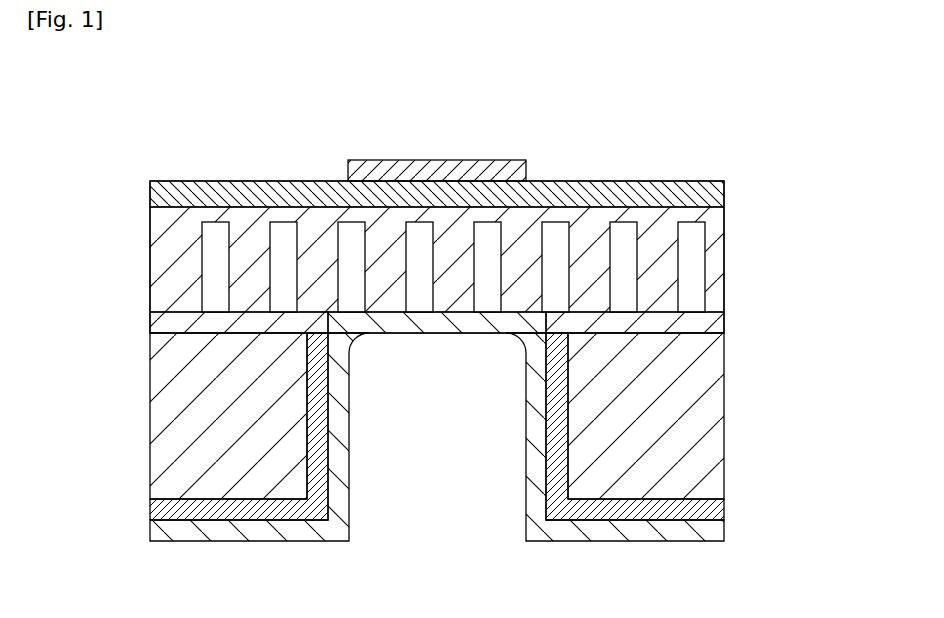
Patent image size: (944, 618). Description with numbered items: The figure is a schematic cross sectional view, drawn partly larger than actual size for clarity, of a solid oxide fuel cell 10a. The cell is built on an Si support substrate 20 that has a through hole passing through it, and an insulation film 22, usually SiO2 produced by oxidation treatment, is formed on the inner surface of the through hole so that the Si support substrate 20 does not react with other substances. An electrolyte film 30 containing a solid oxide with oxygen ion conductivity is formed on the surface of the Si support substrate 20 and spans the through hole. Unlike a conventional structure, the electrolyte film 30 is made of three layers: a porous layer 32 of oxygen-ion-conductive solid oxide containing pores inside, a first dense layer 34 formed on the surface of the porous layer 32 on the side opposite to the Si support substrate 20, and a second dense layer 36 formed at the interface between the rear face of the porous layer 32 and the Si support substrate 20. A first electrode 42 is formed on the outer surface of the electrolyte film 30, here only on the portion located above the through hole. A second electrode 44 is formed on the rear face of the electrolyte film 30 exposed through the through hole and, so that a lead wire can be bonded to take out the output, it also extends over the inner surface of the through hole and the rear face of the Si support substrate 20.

The solid oxide fuel cell 10a is at (822, 104).
The Si support substrate 20 is at (131, 412).
The insulation film 22 is at (150, 505).
The electrolyte film 30 is at (815, 150).
The porous layer 32 is at (727, 238).
The first dense layer 34 is at (727, 187).
The second dense layer 36 is at (727, 323).
The first electrode 42 is at (397, 160).
The second electrode 44 is at (321, 532).